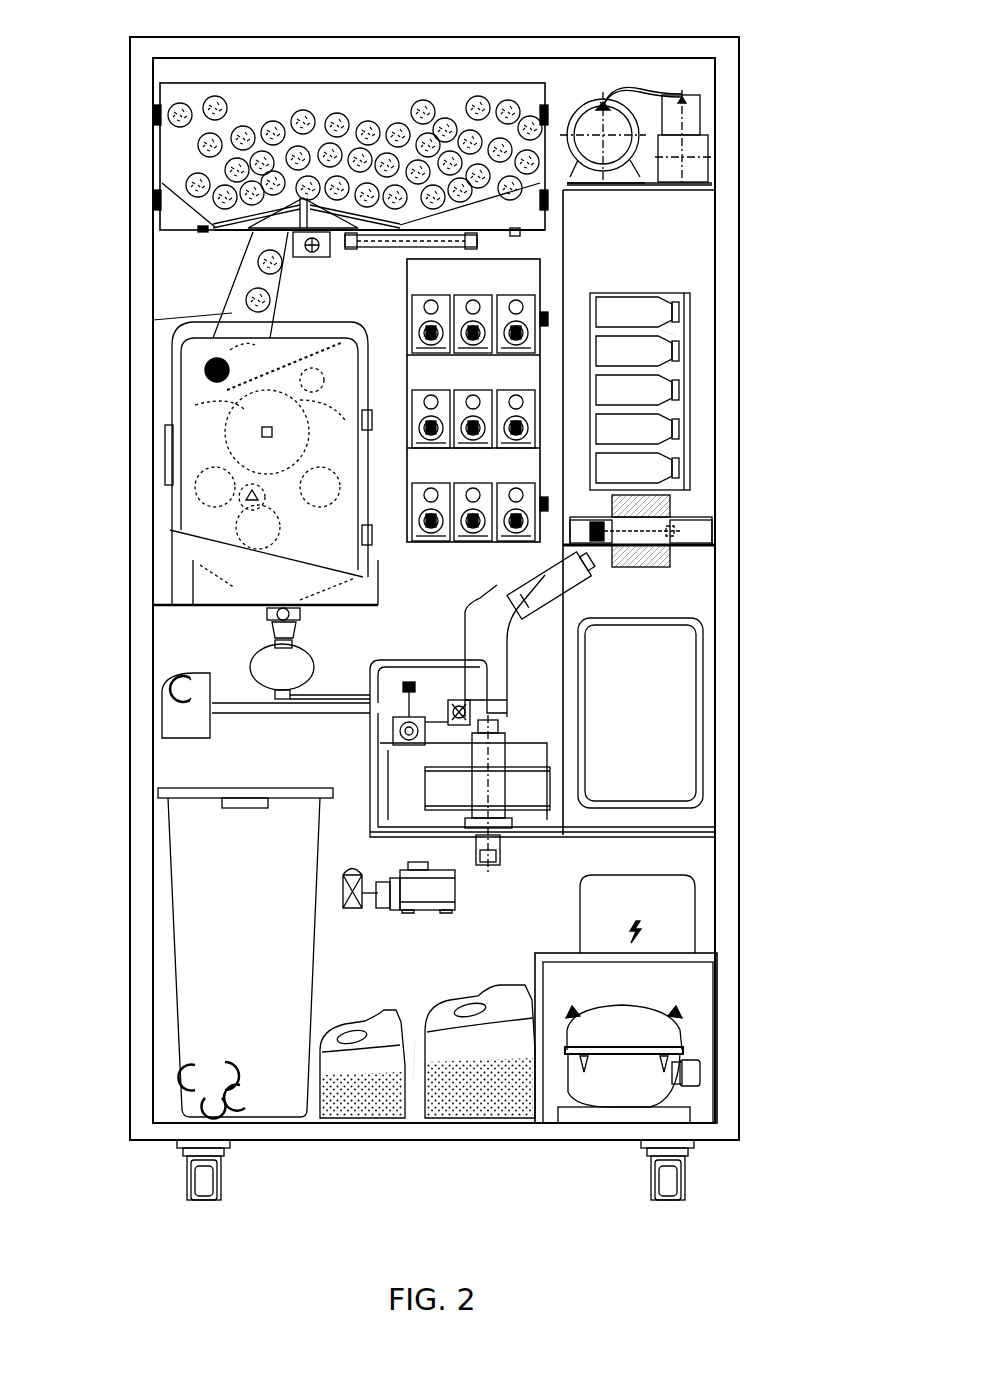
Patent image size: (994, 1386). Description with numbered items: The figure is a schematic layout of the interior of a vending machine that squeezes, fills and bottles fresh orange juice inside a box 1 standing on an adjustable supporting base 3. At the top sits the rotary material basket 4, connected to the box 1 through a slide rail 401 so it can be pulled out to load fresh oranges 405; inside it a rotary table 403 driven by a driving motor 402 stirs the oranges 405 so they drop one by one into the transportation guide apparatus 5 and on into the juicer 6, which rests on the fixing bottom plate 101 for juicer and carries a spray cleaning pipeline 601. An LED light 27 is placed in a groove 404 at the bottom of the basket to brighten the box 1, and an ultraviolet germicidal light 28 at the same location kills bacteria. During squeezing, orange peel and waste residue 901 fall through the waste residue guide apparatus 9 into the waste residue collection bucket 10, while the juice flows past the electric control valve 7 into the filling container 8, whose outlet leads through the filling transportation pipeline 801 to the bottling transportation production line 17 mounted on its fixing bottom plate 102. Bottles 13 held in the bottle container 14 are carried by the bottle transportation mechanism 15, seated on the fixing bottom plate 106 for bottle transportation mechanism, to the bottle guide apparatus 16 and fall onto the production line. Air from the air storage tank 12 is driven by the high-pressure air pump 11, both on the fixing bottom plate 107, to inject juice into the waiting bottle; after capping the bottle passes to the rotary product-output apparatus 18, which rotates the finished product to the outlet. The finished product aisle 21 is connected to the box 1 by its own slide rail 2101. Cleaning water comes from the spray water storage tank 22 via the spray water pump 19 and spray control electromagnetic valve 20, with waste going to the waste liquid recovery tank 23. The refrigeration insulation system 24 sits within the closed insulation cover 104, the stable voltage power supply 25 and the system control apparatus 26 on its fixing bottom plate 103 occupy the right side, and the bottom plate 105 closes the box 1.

The box 1 is at (275, 48).
The adjustable supporting base 3 is at (212, 1198).
The rotary material basket 4 is at (160, 160).
The slide rail 401 is at (545, 110).
The driving motor 402 is at (340, 282).
The rotary table 403 is at (245, 233).
The groove 404 is at (185, 232).
The oranges 405 is at (305, 118).
The transportation guide apparatus 5 is at (153, 320).
The juicer 6 is at (210, 455).
The spray cleaning pipeline 601 is at (287, 372).
The electric control valve 7 is at (153, 605).
The filling container 8 is at (255, 672).
The filling transportation pipeline 801 is at (373, 696).
The waste residue guide apparatus 9 is at (177, 717).
The orange peel and waste residue 901 is at (167, 672).
The waste residue collection bucket 10 is at (223, 920).
The fixing bottom plate for juicer 101 is at (343, 605).
The fixing bottom plate for bottling transportation production line 102 is at (410, 827).
The fixing bottom plate for system control apparatus 103 is at (665, 832).
The closed insulation cover for refrigeration insulation system 104 is at (537, 962).
The bottom plate for box 105 is at (413, 1080).
The fixing bottom plate for bottle transportation mechanism 106 is at (695, 548).
The fixing bottom plate for high-pressure air pump and air storage tank 107 is at (602, 190).
The high-pressure air pump 11 is at (693, 153).
The air storage tank 12 is at (620, 153).
The bottles 13 is at (632, 355).
The bottle container 14 is at (660, 460).
The bottle transportation mechanism 15 is at (690, 515).
The bottle guide apparatus 16 is at (480, 622).
The bottling transportation production line 17 is at (443, 700).
The rotary product-output apparatus 18 is at (530, 793).
The spray water pump 19 is at (432, 905).
The spray control electromagnetic valve 20 is at (343, 900).
The finished product aisle 21 is at (407, 320).
The slide rail 2101 is at (548, 318).
The spray water storage tank 22 is at (350, 1078).
The waste liquid recovery tank 23 is at (460, 1080).
The refrigeration insulation system 24 is at (650, 1038).
The stable voltage power supply 25 is at (663, 928).
The system control apparatus 26 is at (655, 748).
The LED light 27 is at (185, 232).
The ultraviolet germicidal light 28 is at (398, 250).